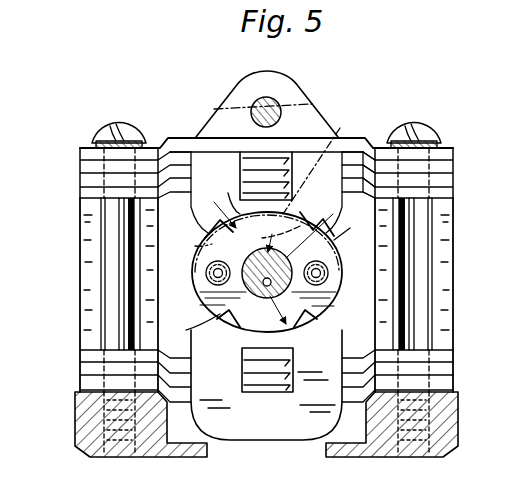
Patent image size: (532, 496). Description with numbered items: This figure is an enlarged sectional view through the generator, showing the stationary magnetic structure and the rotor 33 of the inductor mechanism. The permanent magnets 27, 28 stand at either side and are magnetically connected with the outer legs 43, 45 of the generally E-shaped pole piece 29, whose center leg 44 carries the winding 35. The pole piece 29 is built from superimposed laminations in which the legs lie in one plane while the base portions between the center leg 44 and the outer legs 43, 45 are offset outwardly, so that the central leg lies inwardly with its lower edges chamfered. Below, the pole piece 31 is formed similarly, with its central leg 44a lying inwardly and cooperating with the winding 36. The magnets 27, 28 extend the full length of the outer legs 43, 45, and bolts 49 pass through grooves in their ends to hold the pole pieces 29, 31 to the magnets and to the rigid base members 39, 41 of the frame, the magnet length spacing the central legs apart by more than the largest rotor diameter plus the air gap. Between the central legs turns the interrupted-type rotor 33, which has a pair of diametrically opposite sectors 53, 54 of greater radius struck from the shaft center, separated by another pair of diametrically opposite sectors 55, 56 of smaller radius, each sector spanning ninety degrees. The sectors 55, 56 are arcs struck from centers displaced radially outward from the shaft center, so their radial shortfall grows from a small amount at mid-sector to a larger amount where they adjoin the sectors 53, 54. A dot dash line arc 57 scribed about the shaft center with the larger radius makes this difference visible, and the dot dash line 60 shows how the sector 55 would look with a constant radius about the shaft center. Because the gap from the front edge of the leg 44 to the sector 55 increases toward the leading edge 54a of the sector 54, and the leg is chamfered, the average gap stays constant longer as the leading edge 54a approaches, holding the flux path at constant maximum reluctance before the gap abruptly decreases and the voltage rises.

The permanent magnet 27 is at (80, 266).
The permanent magnet 28 is at (456, 258).
The pole piece 29 is at (456, 172).
The pole piece 31 is at (456, 360).
The rotor 33 is at (190, 327).
The winding 35 is at (314, 122).
The winding 36 is at (254, 436).
The base member 39 is at (168, 448).
The base member 41 is at (448, 446).
The outer leg 43 is at (80, 166).
The center leg 44 is at (240, 163).
The central leg 44a is at (282, 382).
The outer leg 45 is at (450, 150).
The bolt 49 is at (118, 124).
The sector 53 is at (322, 262).
The sector 54 is at (206, 284).
The leading edge 54a is at (206, 238).
The sector 55 is at (300, 214).
The sector 56 is at (236, 328).
The dot dash line arc 57 is at (311, 171).
The dot dash line 60 is at (196, 246).